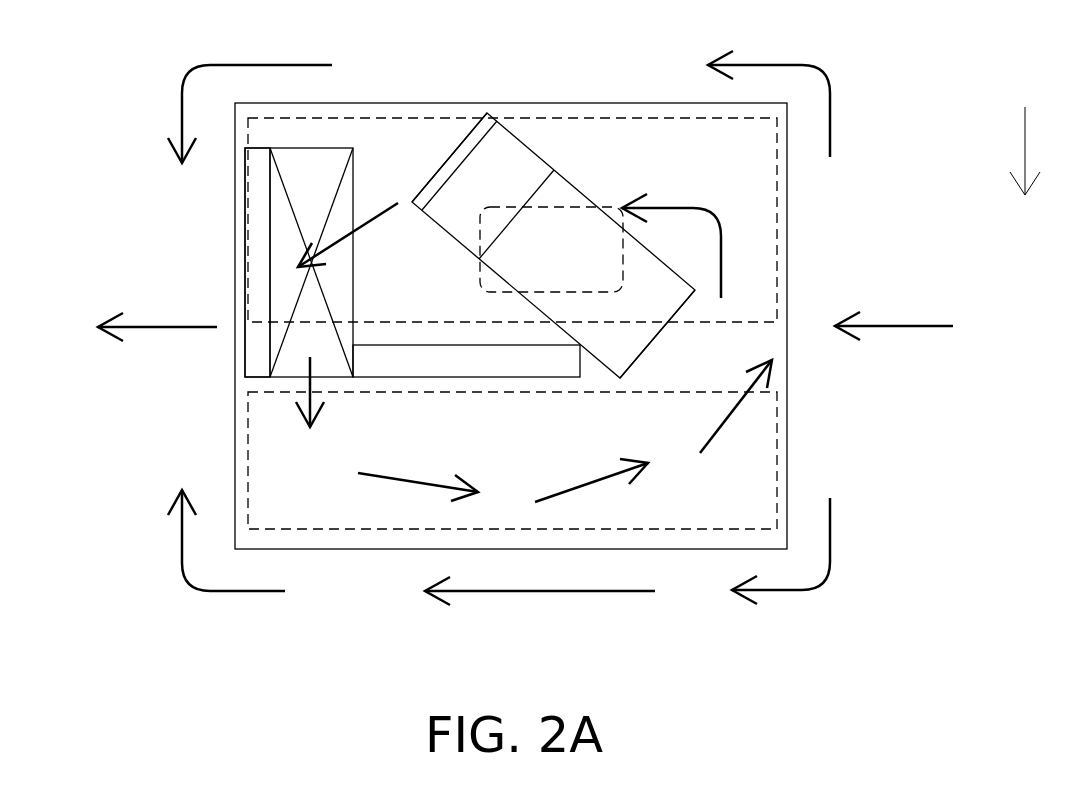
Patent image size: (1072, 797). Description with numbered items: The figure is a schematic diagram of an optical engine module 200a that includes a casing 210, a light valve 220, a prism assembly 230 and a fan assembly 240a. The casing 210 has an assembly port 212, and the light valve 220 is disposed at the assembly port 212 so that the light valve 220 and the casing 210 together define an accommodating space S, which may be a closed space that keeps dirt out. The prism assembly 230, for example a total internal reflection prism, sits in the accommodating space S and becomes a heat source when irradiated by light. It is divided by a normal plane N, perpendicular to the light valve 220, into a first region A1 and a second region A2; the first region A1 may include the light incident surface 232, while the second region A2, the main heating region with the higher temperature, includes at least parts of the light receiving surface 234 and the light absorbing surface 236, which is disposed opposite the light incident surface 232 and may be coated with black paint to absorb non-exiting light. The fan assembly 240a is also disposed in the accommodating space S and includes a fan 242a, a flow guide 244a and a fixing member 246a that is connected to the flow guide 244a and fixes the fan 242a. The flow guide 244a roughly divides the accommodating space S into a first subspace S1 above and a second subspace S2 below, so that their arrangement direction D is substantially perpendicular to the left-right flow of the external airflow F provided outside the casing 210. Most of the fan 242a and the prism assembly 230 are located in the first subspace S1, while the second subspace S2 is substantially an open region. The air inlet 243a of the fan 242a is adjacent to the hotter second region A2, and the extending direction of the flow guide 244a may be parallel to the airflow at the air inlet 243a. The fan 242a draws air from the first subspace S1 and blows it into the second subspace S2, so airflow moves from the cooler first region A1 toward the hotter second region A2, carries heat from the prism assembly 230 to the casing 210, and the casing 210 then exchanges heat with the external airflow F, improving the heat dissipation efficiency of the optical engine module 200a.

The optical engine module 200a is at (918, 637).
The casing 210 is at (790, 213).
The assembly port 212 is at (489, 233).
The light valve 220 is at (625, 250).
The prism assembly 230 is at (577, 207).
The light incident surface 232 is at (647, 347).
The light receiving surface 234 is at (447, 153).
The light absorbing surface 236 is at (490, 155).
The fan assembly 240a is at (100, 350).
The fan 242a is at (297, 332).
The air inlet 243a is at (366, 179).
The flow guide 244a is at (410, 362).
The fixing member 246a is at (258, 362).
The accommodating space S is at (690, 152).
The first subspace S1 is at (758, 325).
The second subspace S2 is at (778, 417).
The first region A1 is at (635, 309).
The second region A2 is at (491, 192).
The normal plane N is at (494, 252).
The arrangement direction D is at (1025, 133).
The external airflow F is at (910, 323).